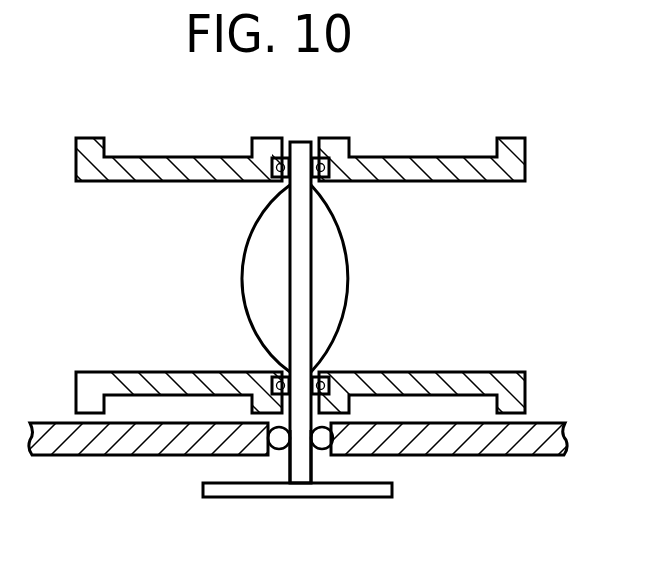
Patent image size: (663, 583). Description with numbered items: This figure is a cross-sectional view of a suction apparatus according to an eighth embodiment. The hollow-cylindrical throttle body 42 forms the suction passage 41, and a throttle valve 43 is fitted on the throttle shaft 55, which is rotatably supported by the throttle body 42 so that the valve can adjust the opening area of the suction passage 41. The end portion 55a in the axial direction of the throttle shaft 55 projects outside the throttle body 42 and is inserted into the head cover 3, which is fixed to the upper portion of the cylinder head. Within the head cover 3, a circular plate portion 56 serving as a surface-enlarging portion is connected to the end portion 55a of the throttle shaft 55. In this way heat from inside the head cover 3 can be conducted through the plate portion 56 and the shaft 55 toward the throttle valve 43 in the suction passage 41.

The head cover 3 is at (466, 450).
The suction passage 41 is at (125, 190).
The throttle body 42 is at (417, 157).
The throttle valve 43 is at (253, 217).
The throttle shaft 55 is at (303, 287).
The end portion 55a is at (290, 465).
The circular plate portion 56 is at (258, 488).